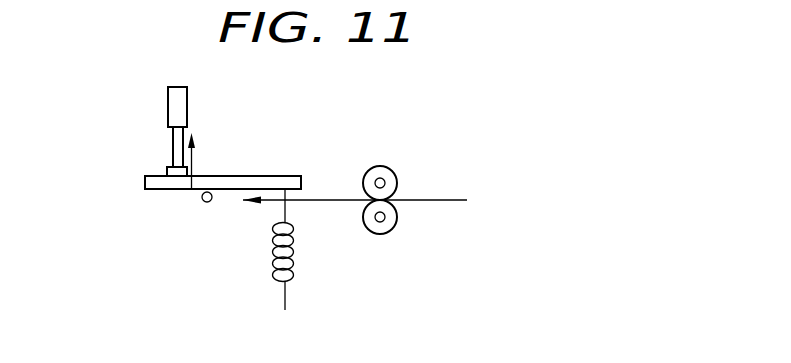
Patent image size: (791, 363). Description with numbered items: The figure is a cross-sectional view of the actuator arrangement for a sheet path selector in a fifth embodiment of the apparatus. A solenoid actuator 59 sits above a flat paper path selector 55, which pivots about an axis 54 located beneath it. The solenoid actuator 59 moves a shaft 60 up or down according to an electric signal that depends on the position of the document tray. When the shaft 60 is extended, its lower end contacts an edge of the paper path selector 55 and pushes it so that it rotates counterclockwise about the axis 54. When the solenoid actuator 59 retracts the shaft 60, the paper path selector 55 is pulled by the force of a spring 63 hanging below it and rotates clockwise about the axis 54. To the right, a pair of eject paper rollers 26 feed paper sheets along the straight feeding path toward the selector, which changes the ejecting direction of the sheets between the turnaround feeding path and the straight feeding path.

The solenoid actuator 59 is at (177, 95).
The shaft 60 is at (172, 142).
The paper path selector 55 is at (270, 176).
The axis 54 is at (202, 202).
The eject paper rollers 26 is at (395, 168).
The spring 63 is at (295, 250).